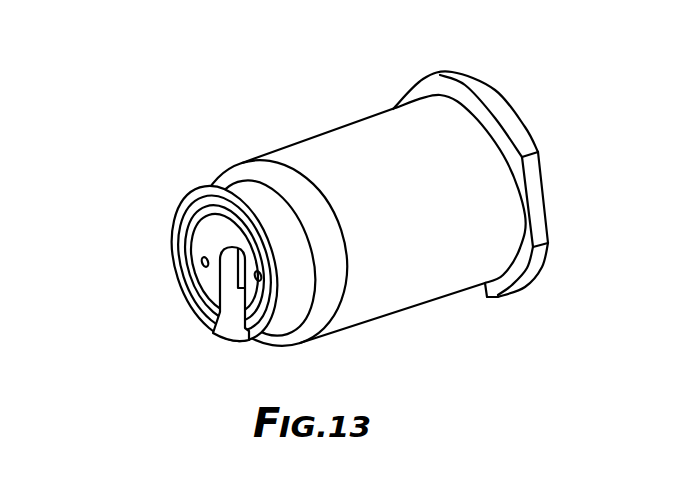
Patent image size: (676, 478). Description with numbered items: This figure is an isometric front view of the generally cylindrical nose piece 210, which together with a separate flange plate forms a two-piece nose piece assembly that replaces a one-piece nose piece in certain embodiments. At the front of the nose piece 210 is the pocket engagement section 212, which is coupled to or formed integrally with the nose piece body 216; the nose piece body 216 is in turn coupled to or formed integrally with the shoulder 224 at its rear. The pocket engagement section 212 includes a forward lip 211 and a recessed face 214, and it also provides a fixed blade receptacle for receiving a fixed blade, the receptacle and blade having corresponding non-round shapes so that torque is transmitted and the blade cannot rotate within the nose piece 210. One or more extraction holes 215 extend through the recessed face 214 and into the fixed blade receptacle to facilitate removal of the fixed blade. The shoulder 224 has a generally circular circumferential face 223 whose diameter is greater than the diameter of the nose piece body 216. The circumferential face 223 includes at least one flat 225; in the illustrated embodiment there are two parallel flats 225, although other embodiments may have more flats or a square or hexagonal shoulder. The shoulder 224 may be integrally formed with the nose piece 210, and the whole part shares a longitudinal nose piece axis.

The nose piece 210 is at (399, 197).
The forward lip 211 is at (215, 334).
The pocket engagement section 212 is at (215, 192).
The recessed face 214 is at (260, 247).
The extraction holes 215 is at (263, 293).
The nose piece body 216 is at (317, 133).
The circumferential face 223 is at (512, 112).
The shoulder 224 is at (447, 70).
The flats 225 is at (537, 195).